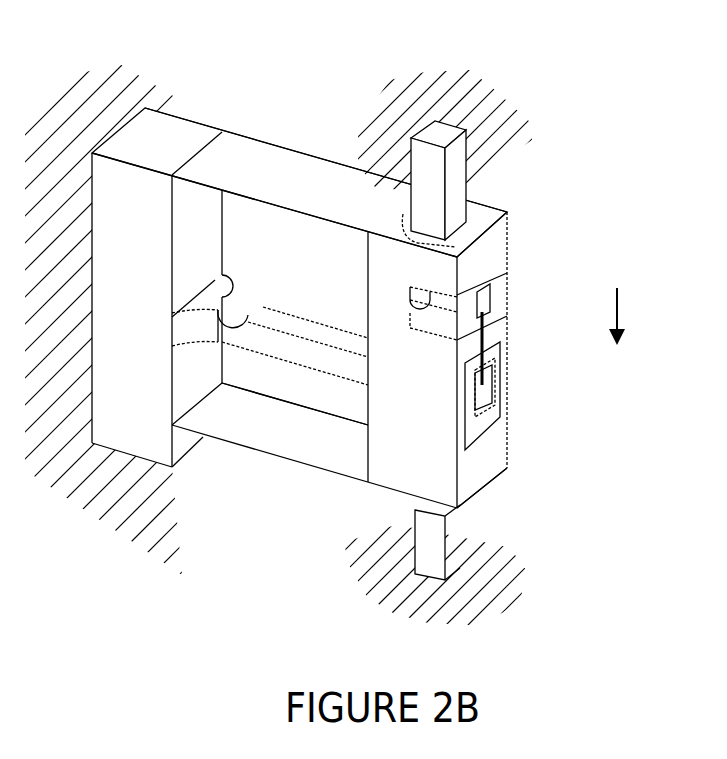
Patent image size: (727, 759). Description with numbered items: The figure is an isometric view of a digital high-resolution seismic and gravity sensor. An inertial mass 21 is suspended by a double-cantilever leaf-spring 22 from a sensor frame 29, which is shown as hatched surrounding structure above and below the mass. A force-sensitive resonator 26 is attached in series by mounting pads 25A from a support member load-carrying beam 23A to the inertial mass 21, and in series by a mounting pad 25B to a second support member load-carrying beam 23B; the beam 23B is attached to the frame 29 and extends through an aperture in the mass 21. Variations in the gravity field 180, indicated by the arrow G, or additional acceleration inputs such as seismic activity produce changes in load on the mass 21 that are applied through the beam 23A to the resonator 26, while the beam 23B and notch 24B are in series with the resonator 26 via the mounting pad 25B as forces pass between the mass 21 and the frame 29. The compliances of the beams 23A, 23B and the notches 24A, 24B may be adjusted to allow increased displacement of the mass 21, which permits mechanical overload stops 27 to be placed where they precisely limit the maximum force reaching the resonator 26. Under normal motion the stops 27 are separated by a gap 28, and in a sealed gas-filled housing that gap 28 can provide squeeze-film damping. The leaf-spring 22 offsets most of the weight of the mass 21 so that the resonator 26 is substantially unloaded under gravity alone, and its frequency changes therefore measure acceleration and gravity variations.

The inertial mass 21 is at (327, 308).
The double-cantilever leaf-spring 22 is at (299, 267).
The support member load-carrying beam 23A is at (370, 428).
The support member load-carrying beam 23B is at (295, 336).
The notch 24A is at (352, 401).
The notch 24B is at (242, 299).
The mounting pads 25A is at (535, 301).
The mounting pad 25B is at (525, 387).
The force-sensitive resonator 26 is at (531, 348).
The mechanical overload stops 27 is at (482, 350).
The gap 28 is at (517, 358).
The sensor frame 29 is at (363, 350).
The gravity field 180 is at (655, 309).